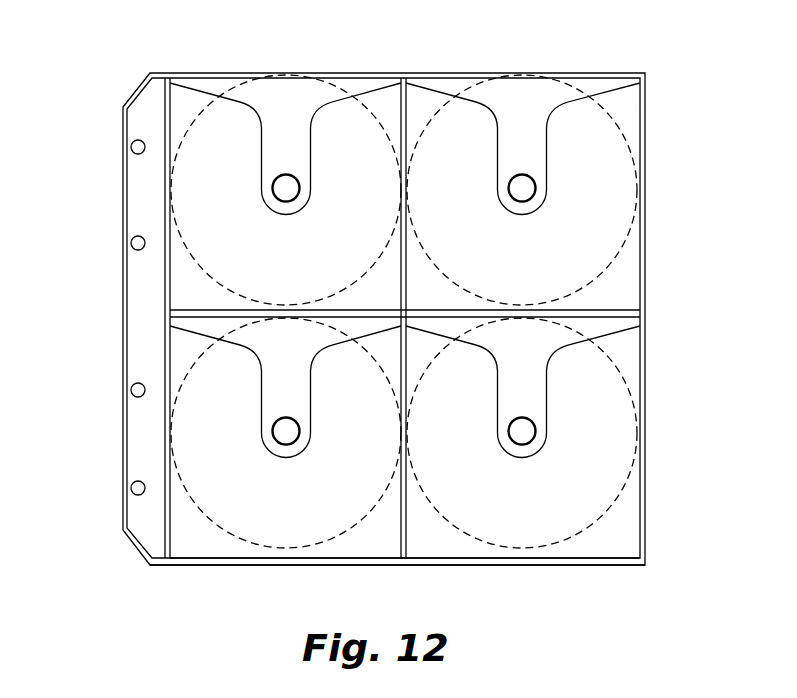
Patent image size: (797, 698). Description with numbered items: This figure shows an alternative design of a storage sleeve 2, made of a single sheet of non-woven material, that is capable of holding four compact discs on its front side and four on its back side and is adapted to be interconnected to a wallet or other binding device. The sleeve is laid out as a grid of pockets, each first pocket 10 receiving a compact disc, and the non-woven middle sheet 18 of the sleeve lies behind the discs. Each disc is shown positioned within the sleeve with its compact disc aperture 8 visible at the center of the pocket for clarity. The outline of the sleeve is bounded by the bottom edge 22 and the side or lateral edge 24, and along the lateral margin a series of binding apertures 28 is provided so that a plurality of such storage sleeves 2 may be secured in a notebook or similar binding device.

The storage sleeve 2 is at (664, 185).
The compact disc aperture 8 is at (536, 432).
The first pocket 10 is at (219, 82).
The non-woven middle sheet 18 is at (358, 82).
The bottom edge 22 is at (568, 565).
The side or lateral edge 24 is at (122, 403).
The binding aperture 28 is at (131, 153).